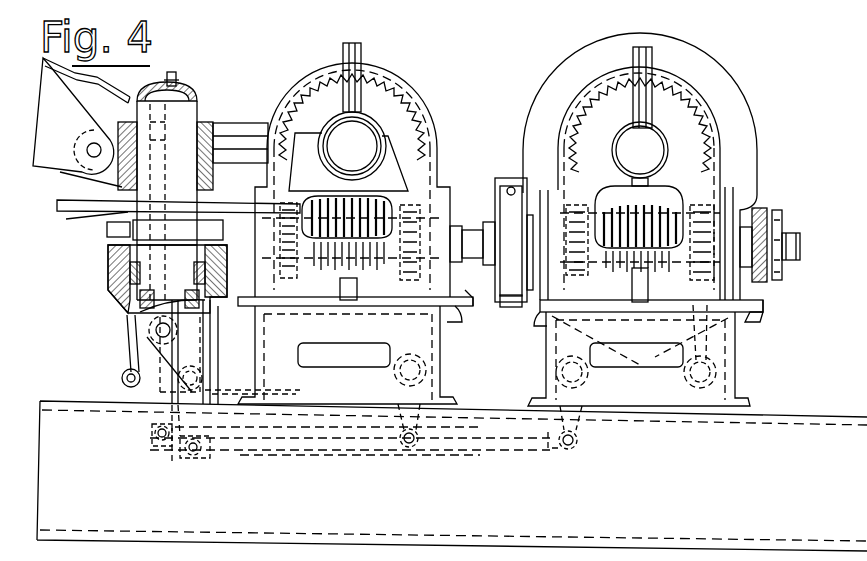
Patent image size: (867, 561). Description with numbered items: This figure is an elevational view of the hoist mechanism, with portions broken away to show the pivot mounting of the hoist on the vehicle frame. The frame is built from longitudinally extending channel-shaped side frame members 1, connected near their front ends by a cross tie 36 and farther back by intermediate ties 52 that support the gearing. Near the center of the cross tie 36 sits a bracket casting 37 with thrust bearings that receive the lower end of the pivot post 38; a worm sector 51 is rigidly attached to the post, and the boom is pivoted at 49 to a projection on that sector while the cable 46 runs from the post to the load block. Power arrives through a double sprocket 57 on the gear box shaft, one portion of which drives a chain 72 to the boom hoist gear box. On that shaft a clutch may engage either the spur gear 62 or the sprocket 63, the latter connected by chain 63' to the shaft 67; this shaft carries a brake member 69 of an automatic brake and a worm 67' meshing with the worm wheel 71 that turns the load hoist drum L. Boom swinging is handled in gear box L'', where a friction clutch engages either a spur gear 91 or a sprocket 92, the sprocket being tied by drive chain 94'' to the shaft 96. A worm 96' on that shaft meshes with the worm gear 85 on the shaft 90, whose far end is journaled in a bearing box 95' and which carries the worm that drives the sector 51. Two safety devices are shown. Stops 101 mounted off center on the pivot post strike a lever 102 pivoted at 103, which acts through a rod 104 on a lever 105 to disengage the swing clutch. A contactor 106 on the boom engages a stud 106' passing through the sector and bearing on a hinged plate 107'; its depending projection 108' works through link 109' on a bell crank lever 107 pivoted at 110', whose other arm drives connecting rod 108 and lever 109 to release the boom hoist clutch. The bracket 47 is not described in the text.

The side frame member 1 is at (452, 476).
The cross tie 36 is at (252, 356).
The bracket casting 37 is at (108, 283).
The pivot post 38 is at (194, 92).
The cable 46 is at (174, 86).
The lever plate 47 is at (81, 122).
The boom pivot 49 is at (96, 146).
The worm sector 51 is at (238, 142).
The intermediate tie 52 is at (535, 314).
The sprocket 57 is at (778, 233).
The spur gear 62 is at (700, 278).
The sprocket 63 is at (587, 250).
The chain 63' is at (542, 174).
The shaft 67 is at (686, 183).
The worm 67' is at (609, 184).
The brake member 69 is at (491, 242).
The worm wheel 71 is at (639, 244).
The chain 72 is at (762, 210).
The worm gear 85 is at (340, 204).
The shaft 90 is at (349, 141).
The spur gear 91 is at (270, 195).
The sprocket 92 is at (402, 184).
The drive chain 94'' is at (454, 284).
The bearing box 95' is at (329, 111).
The shaft 96 is at (400, 224).
The worm 96' is at (349, 182).
The stop 101 is at (107, 230).
The lever 102 is at (152, 398).
The pivot 103 is at (156, 331).
The rod 104 is at (168, 466).
The lever 105 is at (414, 430).
The contactor 106 is at (141, 74).
The stud 106' is at (167, 191).
The bell crank lever 107 is at (117, 394).
The plate 107' is at (178, 195).
The connecting rod 108 is at (350, 454).
The depending projection 108' is at (80, 222).
The lever 109 is at (583, 428).
The link 109' is at (110, 351).
The pivot 110' is at (207, 352).
The load hoist drum L is at (644, 166).
The gear box L'' is at (352, 177).